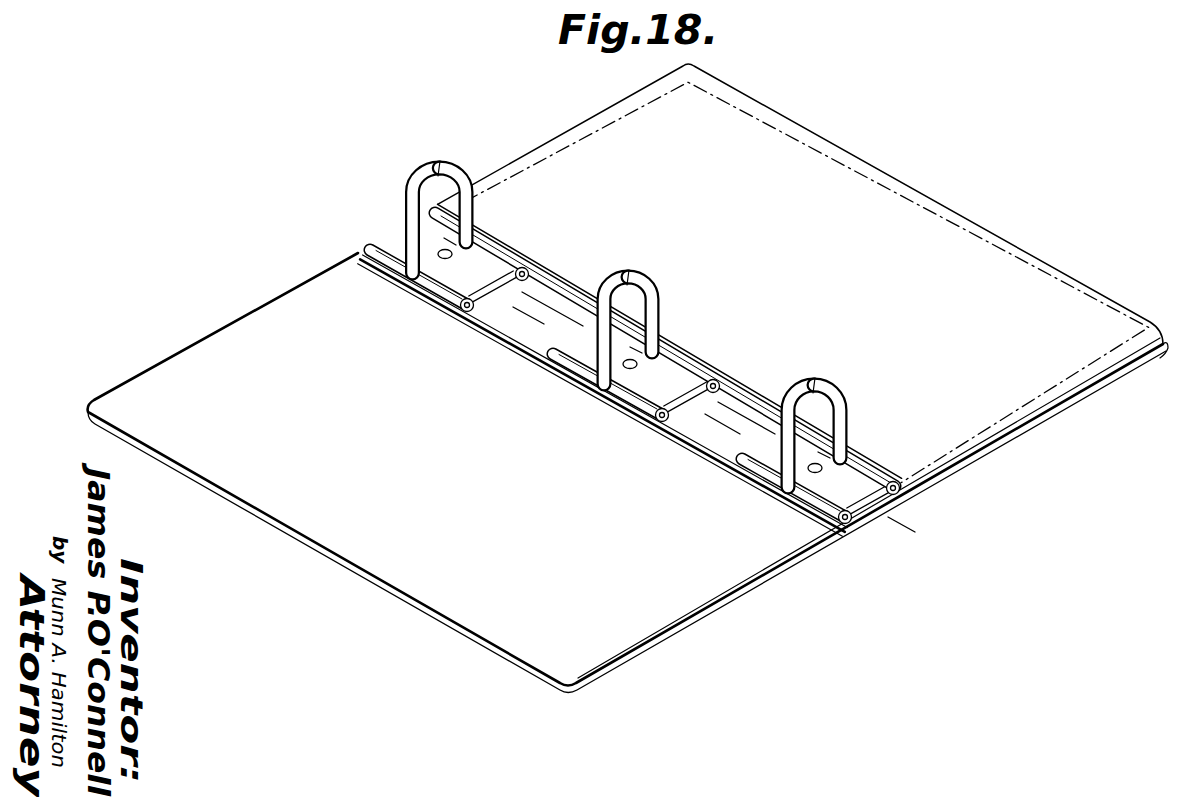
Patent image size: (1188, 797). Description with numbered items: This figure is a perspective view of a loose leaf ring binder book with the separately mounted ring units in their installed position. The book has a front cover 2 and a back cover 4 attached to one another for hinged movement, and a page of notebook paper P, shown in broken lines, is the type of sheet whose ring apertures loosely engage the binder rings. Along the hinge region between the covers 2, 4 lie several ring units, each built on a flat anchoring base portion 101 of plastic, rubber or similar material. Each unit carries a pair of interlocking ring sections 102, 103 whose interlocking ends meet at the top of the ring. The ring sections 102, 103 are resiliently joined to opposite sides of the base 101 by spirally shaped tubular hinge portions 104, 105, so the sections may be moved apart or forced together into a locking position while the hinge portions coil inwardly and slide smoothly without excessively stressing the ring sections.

The front cover 2 is at (382, 567).
The back cover 4 is at (1158, 332).
The page of notebook paper P is at (1016, 246).
The anchoring base portion 101 is at (484, 282).
The ring section 102 is at (408, 215).
The ring section 103 is at (472, 204).
The tubular hinge portion 104 is at (450, 291).
The tubular hinge portion 105 is at (508, 262).